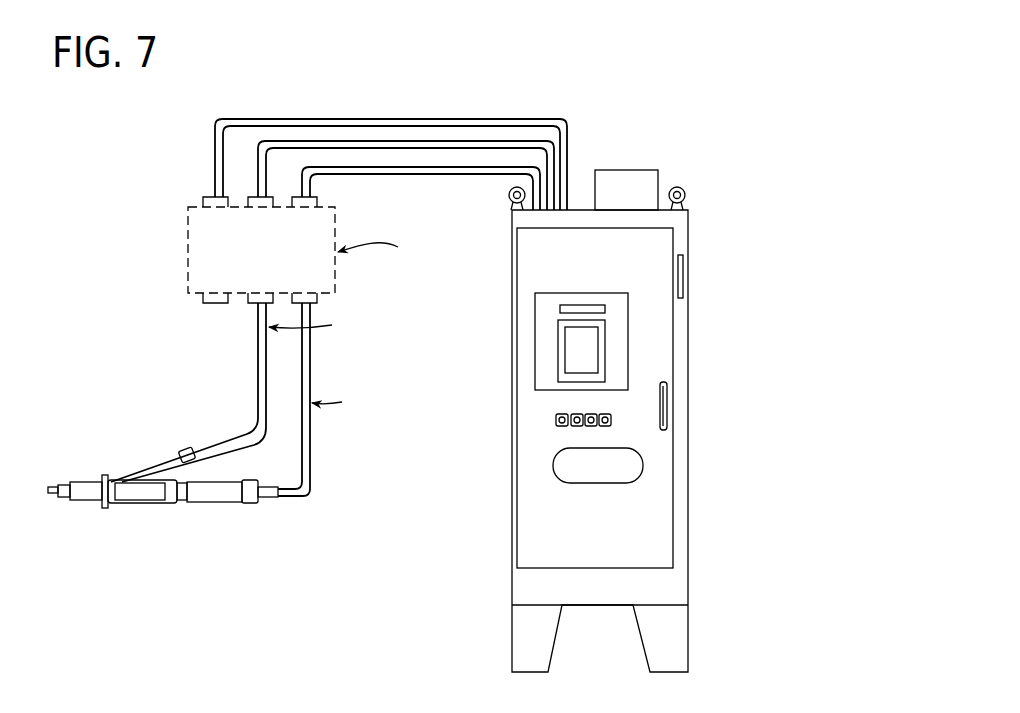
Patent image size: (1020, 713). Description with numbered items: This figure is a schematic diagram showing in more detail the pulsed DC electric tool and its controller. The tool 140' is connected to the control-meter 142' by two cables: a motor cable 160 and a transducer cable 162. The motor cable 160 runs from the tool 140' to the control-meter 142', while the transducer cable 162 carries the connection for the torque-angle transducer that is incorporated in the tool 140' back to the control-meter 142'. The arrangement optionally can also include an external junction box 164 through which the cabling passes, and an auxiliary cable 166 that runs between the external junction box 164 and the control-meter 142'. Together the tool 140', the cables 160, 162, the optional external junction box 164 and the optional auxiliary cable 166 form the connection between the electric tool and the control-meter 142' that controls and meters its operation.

The auxiliary cable 166 is at (215, 135).
The external junction box 164 is at (337, 219).
The transducer cable 162 is at (256, 357).
The motor cable 160 is at (310, 452).
The tool 140' is at (163, 511).
The control-meter 142' is at (550, 421).